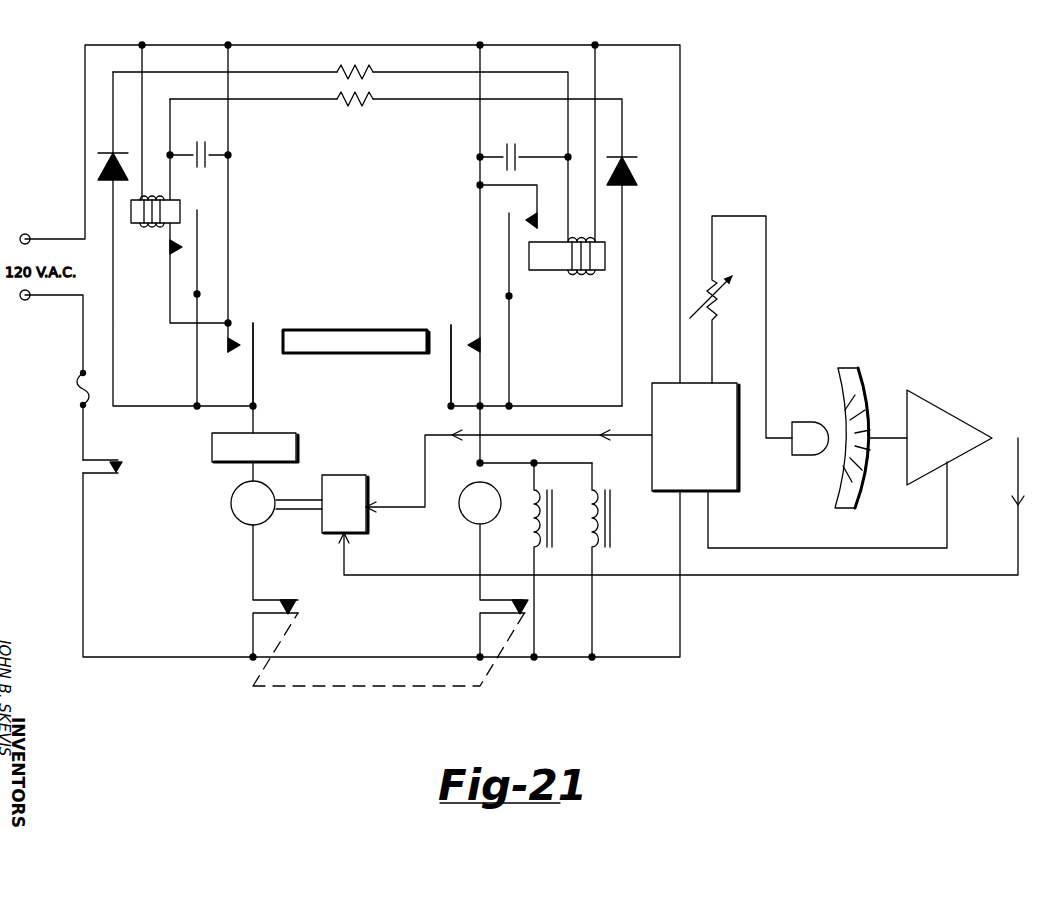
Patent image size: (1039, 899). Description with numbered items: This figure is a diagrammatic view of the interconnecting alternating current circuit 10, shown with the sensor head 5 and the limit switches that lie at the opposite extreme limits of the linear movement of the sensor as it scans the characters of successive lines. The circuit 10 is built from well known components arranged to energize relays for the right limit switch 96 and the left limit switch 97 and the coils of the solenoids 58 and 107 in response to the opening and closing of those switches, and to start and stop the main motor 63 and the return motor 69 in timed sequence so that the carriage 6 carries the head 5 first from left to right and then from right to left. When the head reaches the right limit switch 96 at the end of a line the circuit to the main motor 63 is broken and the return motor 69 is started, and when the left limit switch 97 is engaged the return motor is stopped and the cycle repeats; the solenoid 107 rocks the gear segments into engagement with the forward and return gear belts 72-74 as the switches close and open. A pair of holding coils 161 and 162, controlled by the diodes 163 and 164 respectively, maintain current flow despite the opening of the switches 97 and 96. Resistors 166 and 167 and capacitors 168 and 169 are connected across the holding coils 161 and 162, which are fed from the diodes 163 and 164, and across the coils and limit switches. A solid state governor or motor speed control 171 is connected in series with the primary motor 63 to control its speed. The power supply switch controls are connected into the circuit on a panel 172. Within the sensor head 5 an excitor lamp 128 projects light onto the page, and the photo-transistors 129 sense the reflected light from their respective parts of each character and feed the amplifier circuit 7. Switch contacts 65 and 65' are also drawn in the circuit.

The diode 164 is at (96, 167).
The holding coil 161 is at (156, 228).
The resistor 167 is at (336, 70).
The resistor 166 is at (345, 104).
The capacitor 168 is at (210, 150).
The capacitor 169 is at (500, 148).
The diode 163 is at (638, 150).
The interconnection circuit 10 is at (684, 181).
The holding coil 162 is at (580, 272).
The left limit switch 97 is at (243, 328).
The carriage 6 is at (348, 328).
The right limit switch 96 is at (467, 327).
The motor speed control 171 is at (216, 462).
The gear belts 72-74 is at (366, 458).
The main motor 63 is at (235, 516).
The return motor 69 is at (465, 520).
The solenoid 58 is at (562, 536).
The solenoid 107 is at (617, 536).
The panel 172 is at (738, 487).
The excitor lamp 128 is at (802, 420).
The sensor head 5 is at (873, 372).
The photo-transistor 129 is at (872, 400).
The amplifier circuit 7 is at (958, 416).
The switch 65 is at (390, 662).
The switch 65' is at (106, 479).